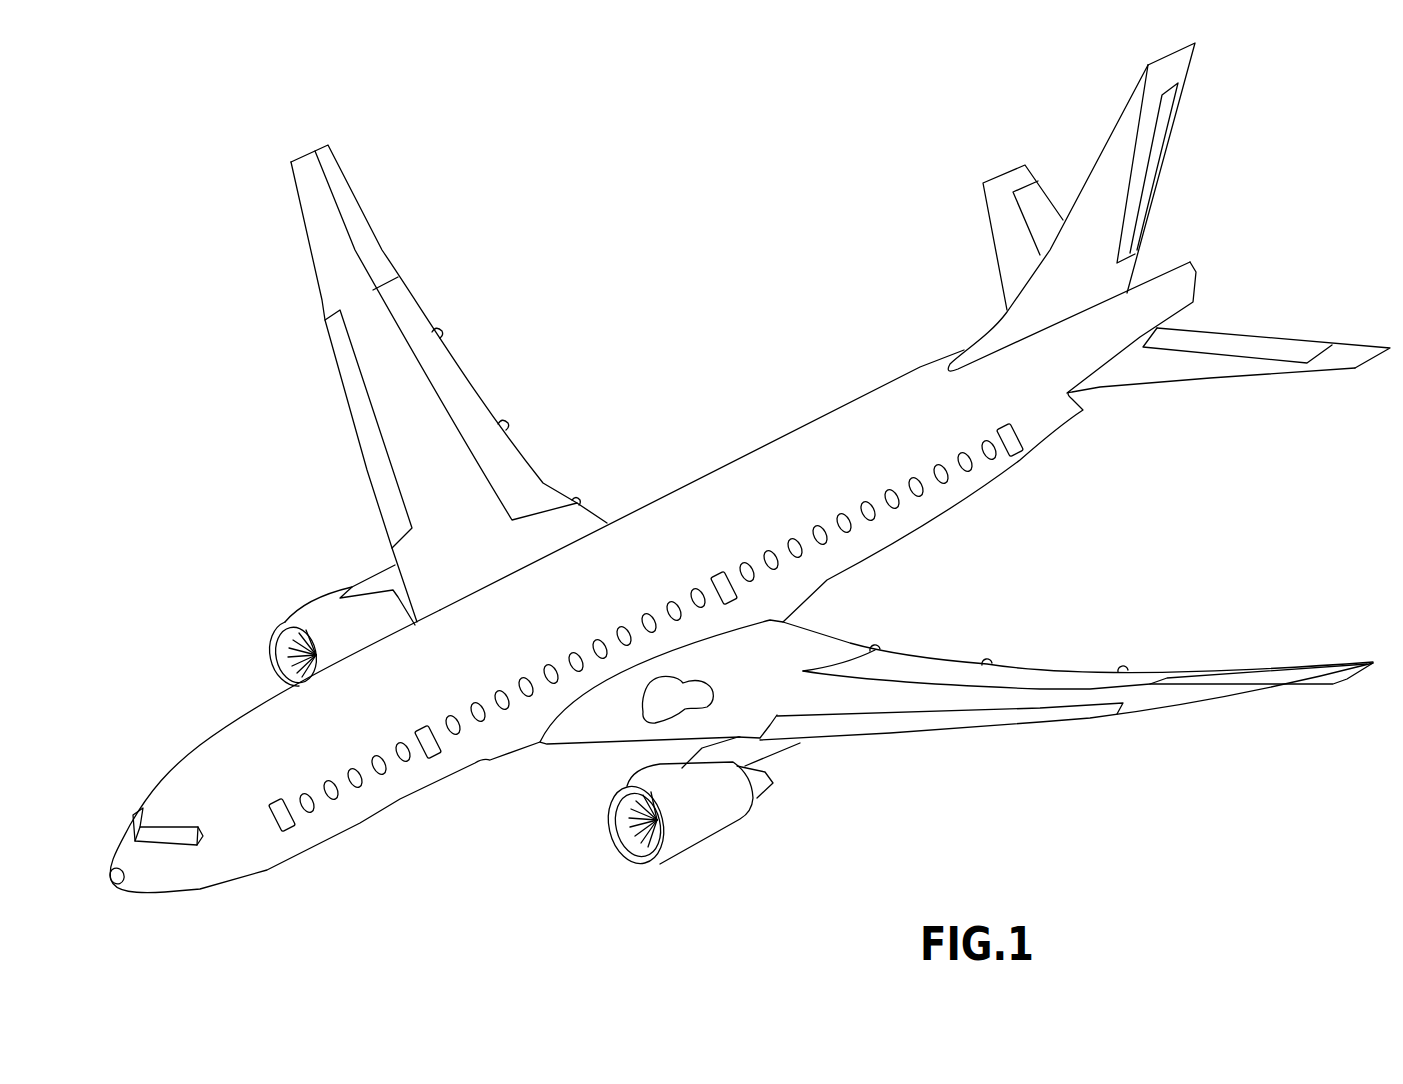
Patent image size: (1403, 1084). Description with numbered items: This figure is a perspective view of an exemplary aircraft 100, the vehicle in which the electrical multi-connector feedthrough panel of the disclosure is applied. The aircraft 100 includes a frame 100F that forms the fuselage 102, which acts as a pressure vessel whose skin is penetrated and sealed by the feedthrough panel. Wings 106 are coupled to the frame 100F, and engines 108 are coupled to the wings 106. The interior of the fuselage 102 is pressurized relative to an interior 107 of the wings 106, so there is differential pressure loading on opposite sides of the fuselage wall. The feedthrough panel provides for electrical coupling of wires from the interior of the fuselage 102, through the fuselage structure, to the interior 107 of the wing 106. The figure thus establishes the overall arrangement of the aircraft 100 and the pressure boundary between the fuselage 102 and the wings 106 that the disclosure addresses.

The aircraft 100 is at (959, 136).
The frame 100F is at (732, 460).
The fuselage 102 is at (183, 757).
The wings 106 is at (318, 298).
The interior of the wings 107 is at (653, 710).
The engines 108 is at (302, 615).